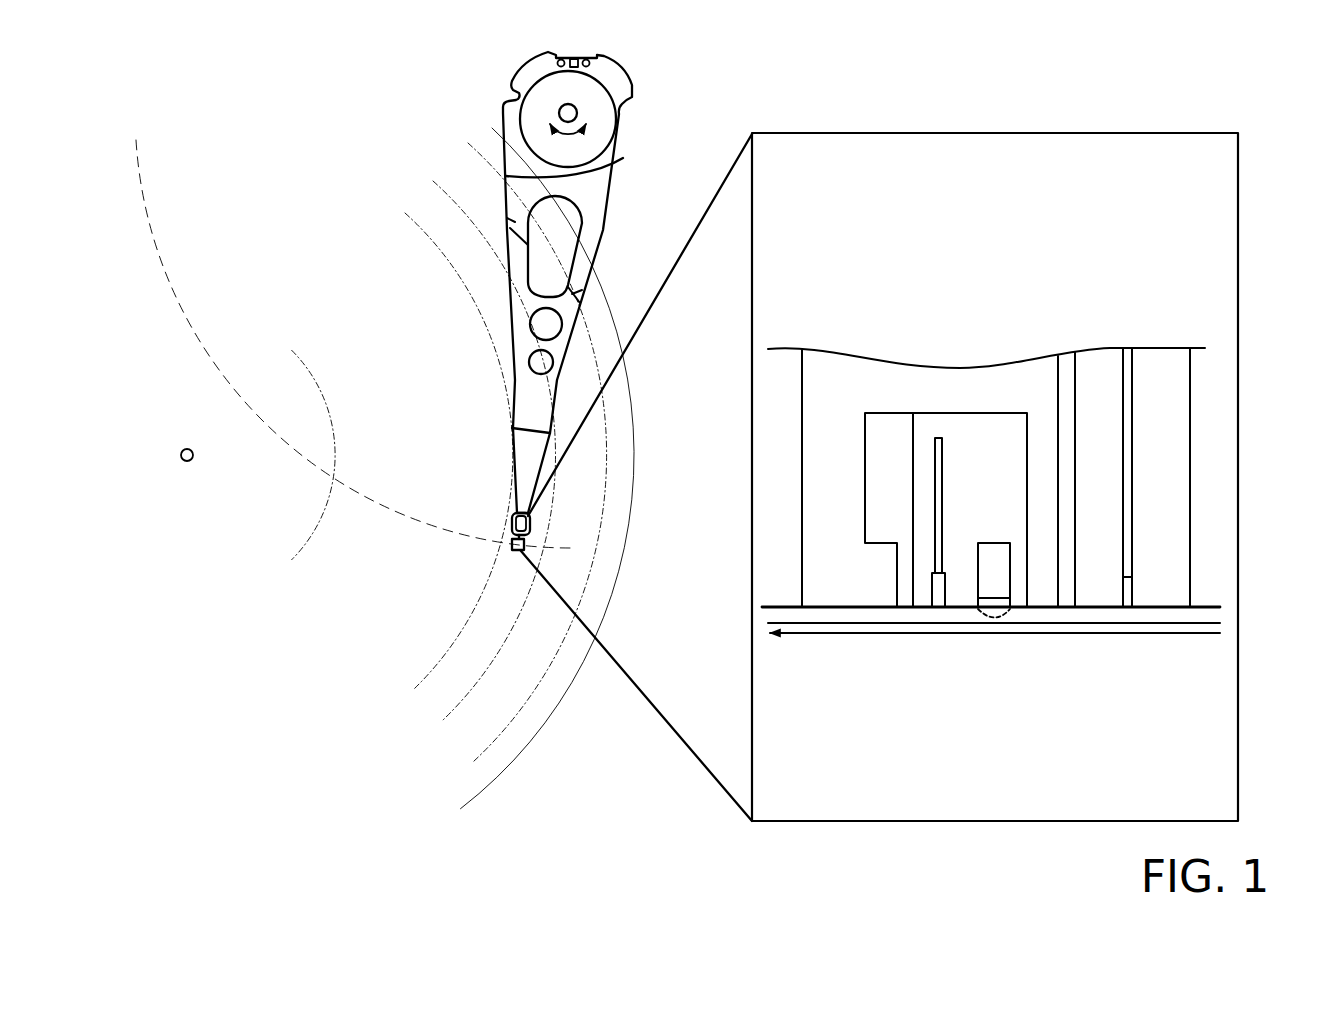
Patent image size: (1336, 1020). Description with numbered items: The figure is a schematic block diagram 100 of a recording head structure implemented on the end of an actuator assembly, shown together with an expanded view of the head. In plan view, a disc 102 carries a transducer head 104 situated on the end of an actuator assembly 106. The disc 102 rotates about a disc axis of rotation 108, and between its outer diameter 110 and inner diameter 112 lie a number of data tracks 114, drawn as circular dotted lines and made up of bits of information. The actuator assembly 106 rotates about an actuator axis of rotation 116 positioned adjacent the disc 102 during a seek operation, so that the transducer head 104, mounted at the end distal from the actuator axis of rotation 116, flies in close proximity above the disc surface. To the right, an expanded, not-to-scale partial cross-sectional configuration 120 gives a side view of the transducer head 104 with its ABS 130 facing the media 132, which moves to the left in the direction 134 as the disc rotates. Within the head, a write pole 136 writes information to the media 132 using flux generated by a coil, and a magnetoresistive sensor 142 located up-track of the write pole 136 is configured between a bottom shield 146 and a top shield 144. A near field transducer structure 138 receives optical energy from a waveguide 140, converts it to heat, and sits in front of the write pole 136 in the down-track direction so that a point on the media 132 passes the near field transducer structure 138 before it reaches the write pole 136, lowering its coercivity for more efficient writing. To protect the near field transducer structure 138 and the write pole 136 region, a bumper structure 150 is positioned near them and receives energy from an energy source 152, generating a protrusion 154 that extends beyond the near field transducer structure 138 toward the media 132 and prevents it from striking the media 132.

The schematic block diagram 100 is at (199, 131).
The disc 102 is at (221, 668).
The transducer head 104 is at (513, 548).
The actuator assembly 106 is at (503, 108).
The disc axis of rotation 108 is at (205, 452).
The outer diameter 110 is at (480, 752).
The inner diameter 112 is at (297, 543).
The data tracks 114 is at (428, 705).
The actuator axis of rotation 116 is at (581, 117).
The partial cross-sectional configuration 120 is at (822, 822).
The ABS 130 is at (790, 606).
The media 132 is at (1207, 618).
The direction 134 is at (837, 637).
The write pole 136 is at (890, 572).
The near field transducer structure 138 is at (930, 572).
The waveguide 140 is at (940, 438).
The magnetoresistive sensor 142 is at (1133, 610).
The top shield 144 is at (1108, 347).
The bottom shield 146 is at (1157, 347).
The bumper structure 150 is at (1018, 610).
The energy source 152 is at (993, 543).
The protrusion 154 is at (997, 622).